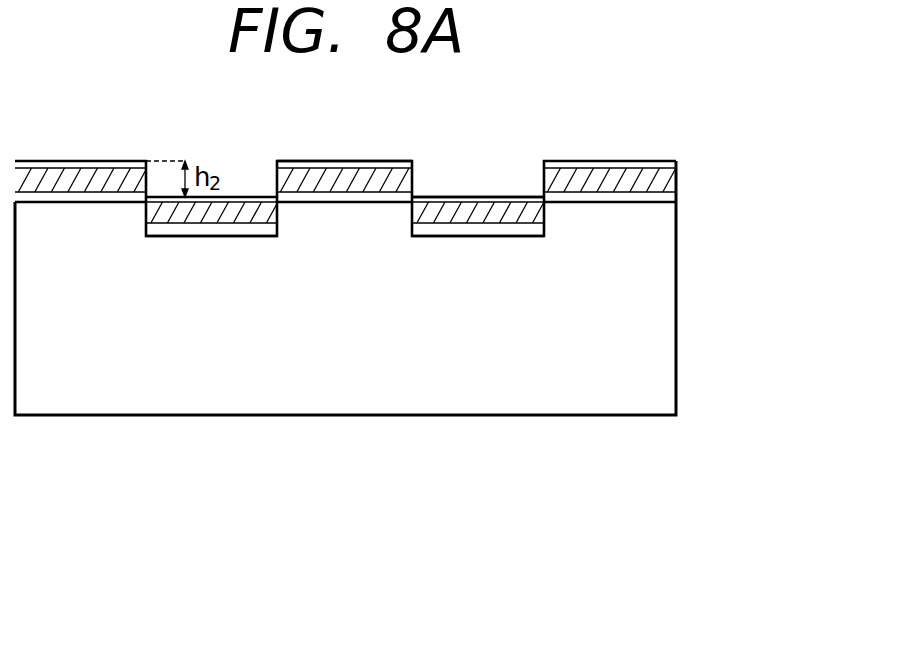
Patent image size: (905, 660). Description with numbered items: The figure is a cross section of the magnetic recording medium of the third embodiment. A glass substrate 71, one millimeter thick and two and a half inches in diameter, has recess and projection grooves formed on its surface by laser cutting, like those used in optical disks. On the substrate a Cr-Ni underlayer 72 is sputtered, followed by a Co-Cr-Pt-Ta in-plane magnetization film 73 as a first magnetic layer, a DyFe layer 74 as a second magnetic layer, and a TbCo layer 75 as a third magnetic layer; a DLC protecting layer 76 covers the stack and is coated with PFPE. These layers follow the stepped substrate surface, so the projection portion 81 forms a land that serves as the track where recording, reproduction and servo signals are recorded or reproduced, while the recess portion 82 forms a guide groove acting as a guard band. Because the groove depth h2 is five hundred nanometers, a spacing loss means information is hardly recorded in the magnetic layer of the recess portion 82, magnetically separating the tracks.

The glass substrate 71 is at (670, 352).
The underlayer 72 is at (670, 198).
The in-plane magnetization film 73 is at (426, 195).
The DyFe layer 74 is at (345, 195).
The TbCo layer 75 is at (663, 181).
The protecting layer 76 is at (677, 162).
The projection portion 81 is at (306, 162).
The recess portion 82 is at (471, 195).